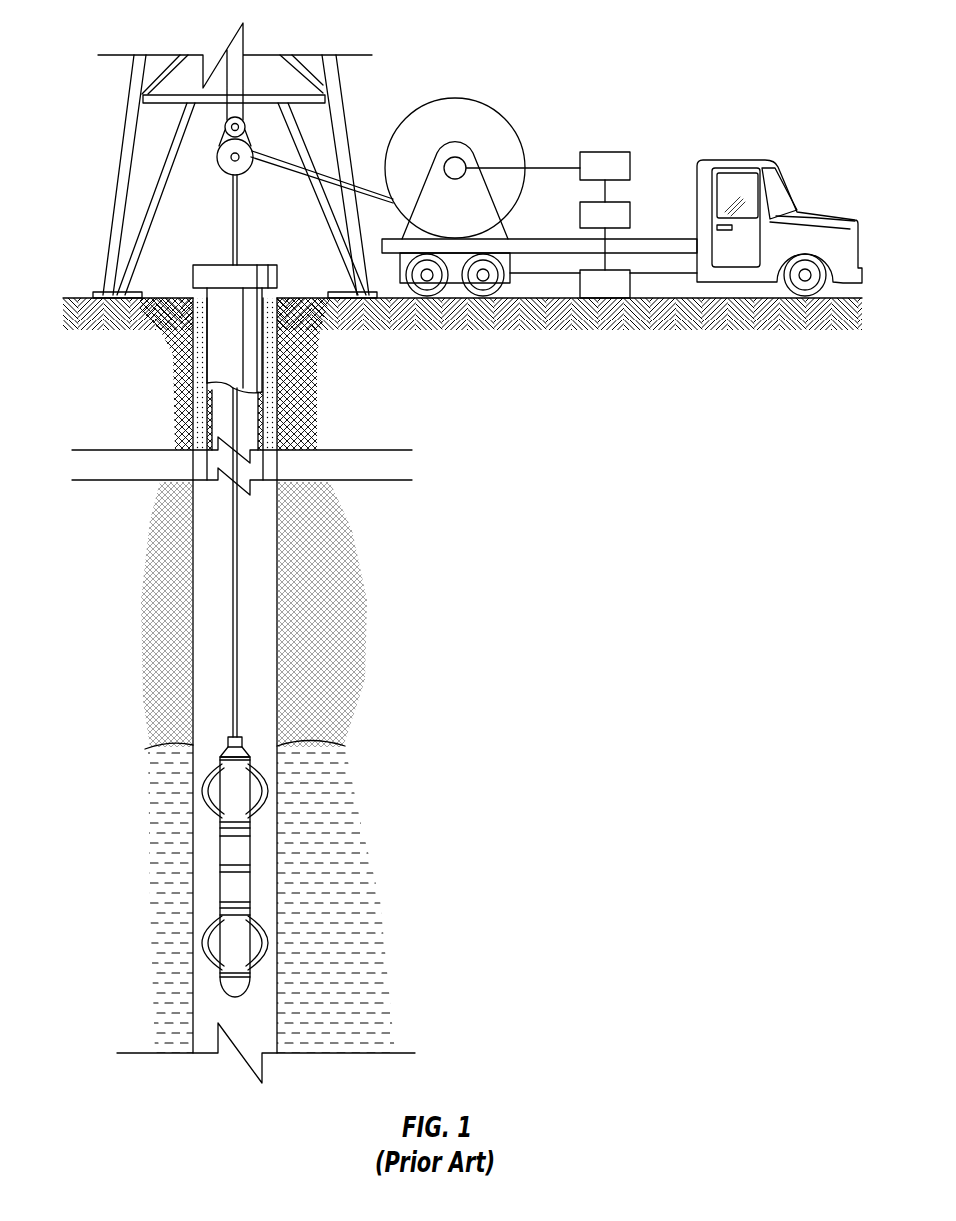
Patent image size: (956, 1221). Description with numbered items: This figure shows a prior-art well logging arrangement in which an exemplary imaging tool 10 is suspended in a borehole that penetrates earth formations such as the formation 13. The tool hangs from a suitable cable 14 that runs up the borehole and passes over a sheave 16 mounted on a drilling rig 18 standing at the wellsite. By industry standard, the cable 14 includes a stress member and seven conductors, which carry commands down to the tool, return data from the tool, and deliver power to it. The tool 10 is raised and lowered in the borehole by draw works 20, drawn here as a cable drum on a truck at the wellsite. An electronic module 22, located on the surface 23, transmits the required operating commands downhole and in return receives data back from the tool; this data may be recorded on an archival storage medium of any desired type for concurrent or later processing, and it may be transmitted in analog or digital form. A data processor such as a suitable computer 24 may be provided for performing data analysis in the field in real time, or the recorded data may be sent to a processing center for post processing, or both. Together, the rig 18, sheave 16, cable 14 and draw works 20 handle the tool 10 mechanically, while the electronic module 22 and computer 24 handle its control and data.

The imaging tool 10 is at (255, 853).
The earth formations 13 is at (382, 597).
The cable 14 is at (232, 238).
The sheave 16 is at (217, 155).
The drilling rig 18 is at (128, 92).
The draw works 20 is at (452, 97).
The electronic module 22 is at (620, 152).
The surface 23 is at (83, 297).
The computer 24 is at (620, 202).